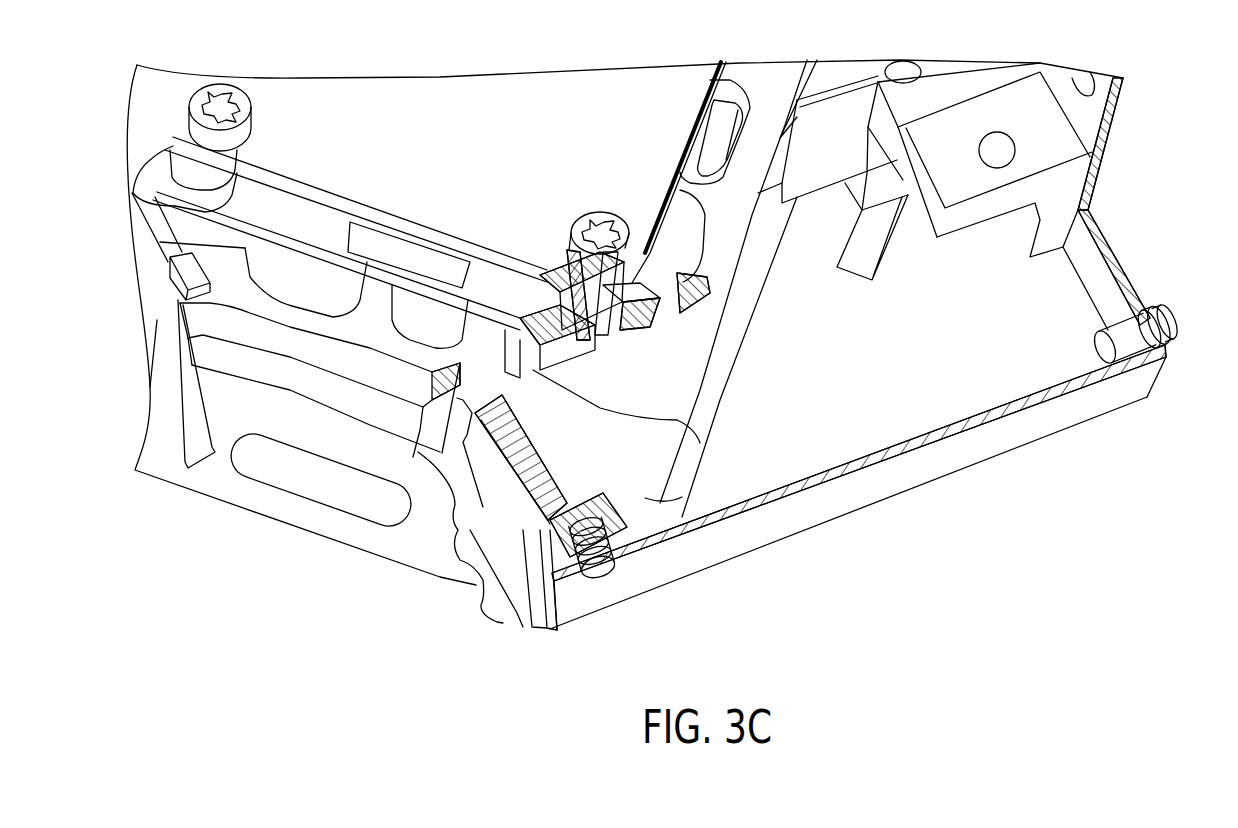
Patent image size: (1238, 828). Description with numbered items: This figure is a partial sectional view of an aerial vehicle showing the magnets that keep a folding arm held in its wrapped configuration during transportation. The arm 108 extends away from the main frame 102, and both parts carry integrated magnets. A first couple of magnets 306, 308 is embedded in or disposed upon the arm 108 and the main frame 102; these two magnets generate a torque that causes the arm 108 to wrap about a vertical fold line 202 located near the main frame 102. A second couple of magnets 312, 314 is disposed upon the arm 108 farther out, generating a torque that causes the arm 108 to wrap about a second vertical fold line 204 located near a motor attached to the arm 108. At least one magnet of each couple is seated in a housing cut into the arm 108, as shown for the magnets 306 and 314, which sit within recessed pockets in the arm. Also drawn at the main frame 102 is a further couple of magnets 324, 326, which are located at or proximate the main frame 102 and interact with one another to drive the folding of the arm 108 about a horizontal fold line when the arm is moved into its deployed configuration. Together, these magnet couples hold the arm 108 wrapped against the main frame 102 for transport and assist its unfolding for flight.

The main frame 102 is at (999, 196).
The arm 108 is at (875, 487).
The vertical fold line 202 is at (1153, 392).
The vertical fold line 204 is at (535, 604).
The magnet 306 is at (1140, 344).
The magnet 308 is at (1152, 320).
The magnet 312 is at (595, 567).
The magnet 314 is at (605, 506).
The magnet 324 is at (1085, 88).
The magnet 326 is at (992, 158).